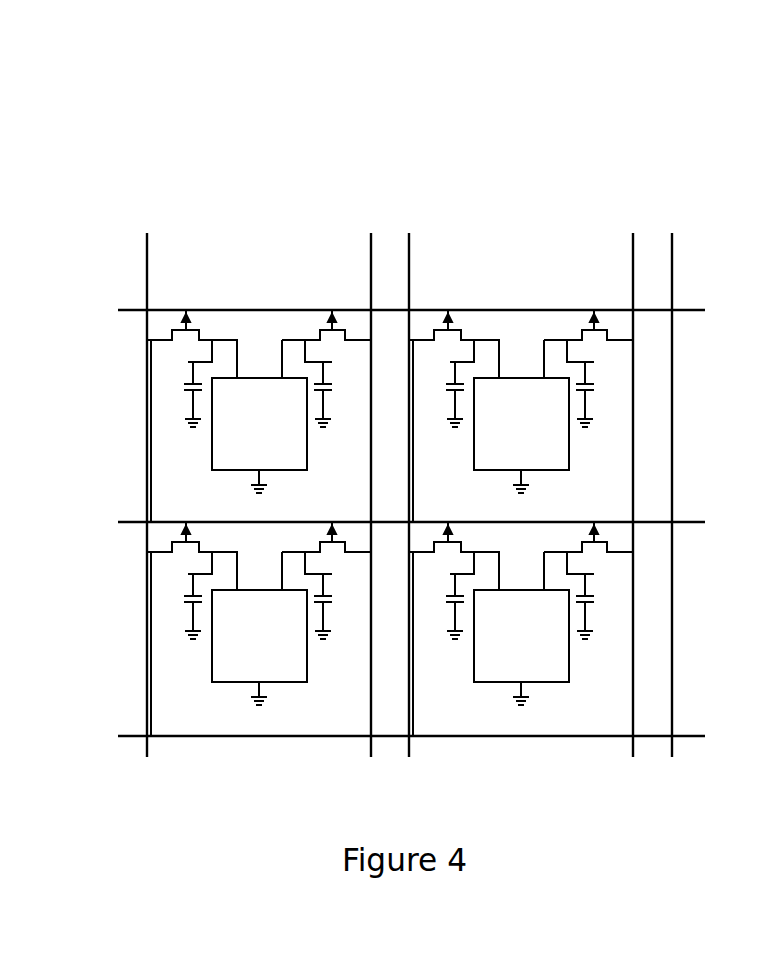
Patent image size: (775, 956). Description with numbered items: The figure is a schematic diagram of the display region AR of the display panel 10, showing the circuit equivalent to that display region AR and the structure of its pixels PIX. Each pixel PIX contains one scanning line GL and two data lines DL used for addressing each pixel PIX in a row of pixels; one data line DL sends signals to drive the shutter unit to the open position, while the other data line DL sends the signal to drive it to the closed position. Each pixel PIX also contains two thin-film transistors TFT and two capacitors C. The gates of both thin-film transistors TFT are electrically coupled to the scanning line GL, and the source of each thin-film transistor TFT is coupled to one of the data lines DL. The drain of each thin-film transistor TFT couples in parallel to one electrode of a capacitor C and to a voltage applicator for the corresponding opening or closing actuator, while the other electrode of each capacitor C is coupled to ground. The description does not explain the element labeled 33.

The display panel 10 is at (380, 102).
The display region AR is at (497, 140).
The data line DL is at (150, 258).
The scanning line GL is at (128, 306).
The thin-film transistor TFT is at (322, 316).
The pixel PIX is at (387, 484).
The capacitor C is at (181, 397).
The pixel electrode 33 is at (293, 457).